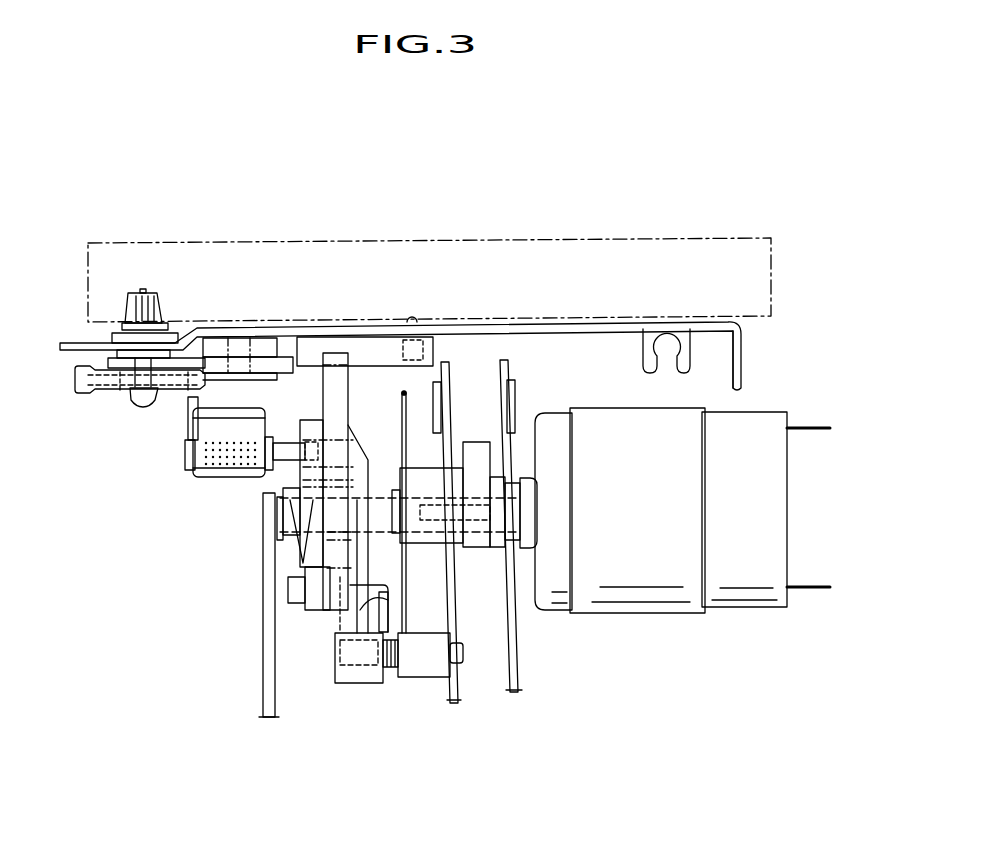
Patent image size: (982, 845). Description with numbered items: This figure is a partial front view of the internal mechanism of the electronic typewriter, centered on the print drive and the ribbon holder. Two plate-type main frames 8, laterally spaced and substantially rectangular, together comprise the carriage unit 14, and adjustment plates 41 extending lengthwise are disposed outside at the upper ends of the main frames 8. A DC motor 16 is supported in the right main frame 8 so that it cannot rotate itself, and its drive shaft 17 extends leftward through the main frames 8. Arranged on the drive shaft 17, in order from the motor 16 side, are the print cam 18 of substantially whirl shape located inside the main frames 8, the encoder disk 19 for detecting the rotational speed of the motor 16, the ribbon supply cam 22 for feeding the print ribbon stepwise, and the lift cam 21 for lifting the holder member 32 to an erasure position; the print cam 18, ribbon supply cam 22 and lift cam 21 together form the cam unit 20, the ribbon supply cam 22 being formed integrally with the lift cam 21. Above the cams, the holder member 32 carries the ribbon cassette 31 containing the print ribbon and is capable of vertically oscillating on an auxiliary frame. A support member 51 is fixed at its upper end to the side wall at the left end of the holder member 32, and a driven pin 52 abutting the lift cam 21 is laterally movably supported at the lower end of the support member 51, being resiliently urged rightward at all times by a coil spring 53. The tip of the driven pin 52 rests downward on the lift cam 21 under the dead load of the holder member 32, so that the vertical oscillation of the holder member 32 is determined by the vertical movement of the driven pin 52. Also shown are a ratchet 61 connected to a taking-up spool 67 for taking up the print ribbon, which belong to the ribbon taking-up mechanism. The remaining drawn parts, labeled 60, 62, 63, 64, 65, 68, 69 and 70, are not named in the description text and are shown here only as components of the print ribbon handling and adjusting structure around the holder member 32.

The main frame 8 is at (461, 692).
The carriage unit 14 is at (483, 576).
The DC motor 16 is at (745, 607).
The drive shaft 17 is at (481, 522).
The print cam 18 is at (476, 440).
The encoder disk 19 is at (400, 412).
The cam unit 20 is at (390, 567).
The lift cam 21 is at (309, 612).
The ribbon supply cam 22 is at (338, 636).
The ribbon cassette 31 is at (562, 238).
The holder member 32 is at (743, 351).
The adjustment plate 41 is at (518, 397).
The support member 51 is at (228, 474).
The driven pin 52 is at (282, 442).
The coil spring 53 is at (220, 465).
The adjusting mechanism 60 is at (253, 296).
The ratchet 61 is at (113, 390).
The nut 62 is at (148, 408).
The slide plate 63 is at (300, 357).
The mounting plate 64 is at (378, 324).
The guide block 65 is at (252, 352).
The taking-up spool 67 is at (162, 306).
The stopper block 68 is at (427, 678).
The link 69 is at (360, 610).
The pin bracket 70 is at (385, 585).